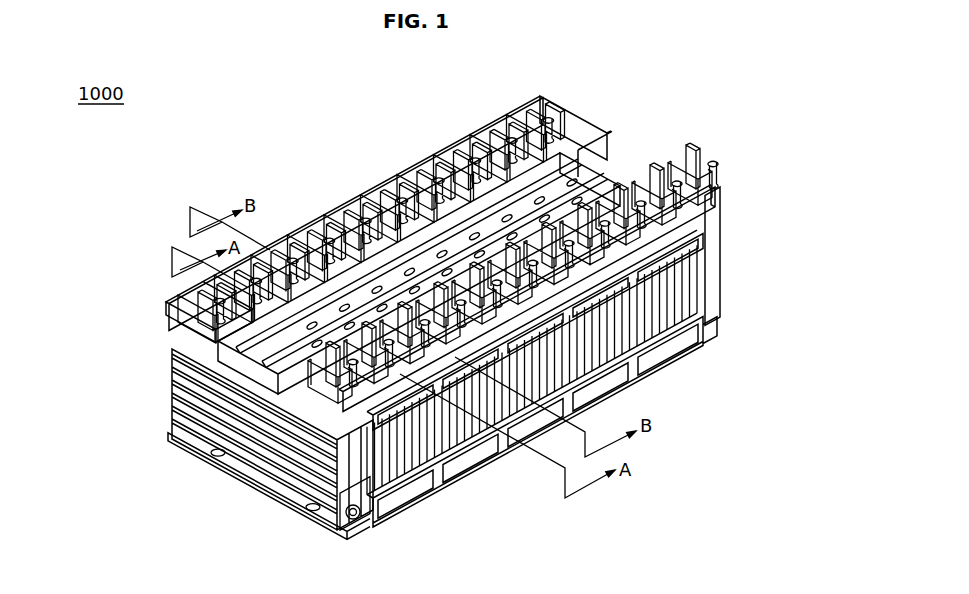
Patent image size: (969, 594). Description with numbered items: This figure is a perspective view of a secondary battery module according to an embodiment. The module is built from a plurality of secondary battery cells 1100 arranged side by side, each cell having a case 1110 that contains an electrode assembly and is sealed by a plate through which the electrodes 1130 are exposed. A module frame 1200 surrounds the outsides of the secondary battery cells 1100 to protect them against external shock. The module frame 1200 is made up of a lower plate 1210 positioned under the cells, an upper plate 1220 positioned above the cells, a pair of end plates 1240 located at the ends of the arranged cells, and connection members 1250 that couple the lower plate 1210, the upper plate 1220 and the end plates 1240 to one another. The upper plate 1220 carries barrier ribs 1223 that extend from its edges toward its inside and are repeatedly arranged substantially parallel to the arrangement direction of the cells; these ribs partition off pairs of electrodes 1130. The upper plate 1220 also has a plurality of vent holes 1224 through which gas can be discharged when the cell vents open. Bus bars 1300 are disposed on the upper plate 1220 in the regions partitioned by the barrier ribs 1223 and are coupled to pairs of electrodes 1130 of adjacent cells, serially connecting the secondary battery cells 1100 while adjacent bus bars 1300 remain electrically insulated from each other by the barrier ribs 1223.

The secondary battery cells 1100 is at (658, 333).
The case 1110 is at (680, 297).
The electrodes 1130 is at (652, 220).
The module frame 1200 is at (130, 346).
The lower plate 1210 is at (407, 518).
The upper plate 1220 is at (328, 208).
The barrier ribs 1223 is at (505, 212).
The vent holes 1224 is at (483, 170).
The end plates 1240 is at (247, 470).
The connection members 1250 is at (348, 517).
The bus bars 1300 is at (512, 133).